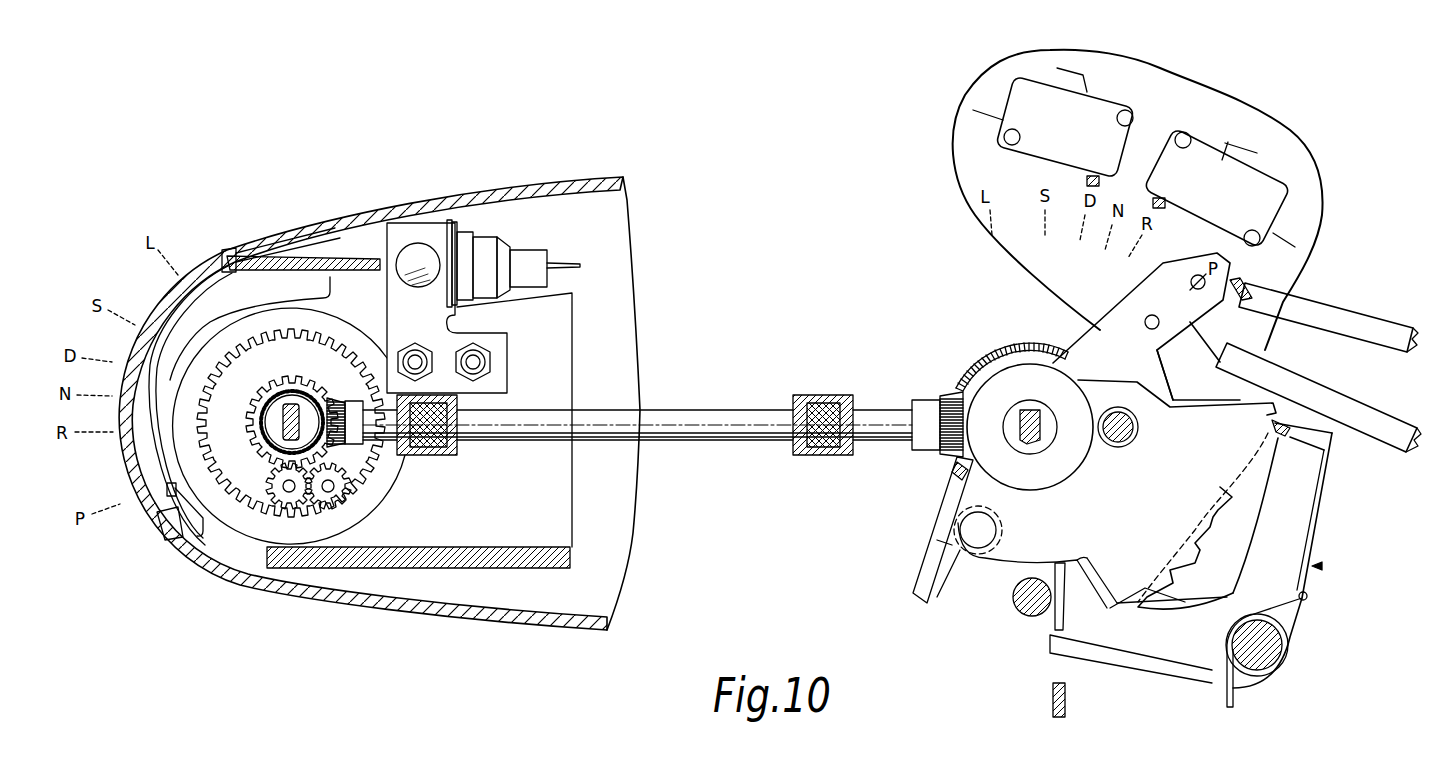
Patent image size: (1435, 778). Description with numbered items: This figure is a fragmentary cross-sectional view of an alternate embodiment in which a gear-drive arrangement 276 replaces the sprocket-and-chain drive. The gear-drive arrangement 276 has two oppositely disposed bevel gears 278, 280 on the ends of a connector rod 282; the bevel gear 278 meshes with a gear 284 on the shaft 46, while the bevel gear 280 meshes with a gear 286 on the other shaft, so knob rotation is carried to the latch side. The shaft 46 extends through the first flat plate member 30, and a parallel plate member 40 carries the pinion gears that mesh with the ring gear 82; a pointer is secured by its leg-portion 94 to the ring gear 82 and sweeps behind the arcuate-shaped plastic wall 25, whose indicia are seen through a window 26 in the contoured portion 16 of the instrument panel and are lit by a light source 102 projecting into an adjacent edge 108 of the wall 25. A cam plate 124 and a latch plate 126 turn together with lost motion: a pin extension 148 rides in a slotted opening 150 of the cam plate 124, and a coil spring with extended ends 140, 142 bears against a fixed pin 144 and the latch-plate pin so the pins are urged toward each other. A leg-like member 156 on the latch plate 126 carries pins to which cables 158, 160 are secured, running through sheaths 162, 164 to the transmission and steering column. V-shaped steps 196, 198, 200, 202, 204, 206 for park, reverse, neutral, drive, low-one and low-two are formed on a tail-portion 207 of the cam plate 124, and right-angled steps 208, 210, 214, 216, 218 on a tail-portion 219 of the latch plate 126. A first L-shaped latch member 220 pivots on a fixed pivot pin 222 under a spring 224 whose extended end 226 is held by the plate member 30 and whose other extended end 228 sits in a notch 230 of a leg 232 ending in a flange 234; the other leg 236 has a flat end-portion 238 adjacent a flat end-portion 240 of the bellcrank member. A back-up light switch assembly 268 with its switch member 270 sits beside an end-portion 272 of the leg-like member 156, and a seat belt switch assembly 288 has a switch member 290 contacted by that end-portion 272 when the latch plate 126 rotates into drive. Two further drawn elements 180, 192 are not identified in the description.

The contoured rearwardly extending portion 16 is at (440, 608).
The arcuate-shaped plastic wall 25 is at (170, 515).
The window 26 is at (207, 270).
The first flat plate member 30 is at (1273, 115).
The plate member 40 is at (550, 525).
The shaft 46 is at (283, 422).
The ring gear 82 is at (363, 502).
The leg-portion 94 is at (170, 487).
The light source 102 is at (415, 252).
The adjacent edge 108 is at (240, 247).
The cam plate 124 is at (975, 490).
The latch plate 126 is at (1098, 348).
The extended end 140 is at (1055, 620).
The extended end 142 is at (925, 560).
The fixed pin 144 is at (1020, 594).
The pin extension 148 is at (985, 532).
The slotted opening 150 is at (992, 512).
The leg-like member 156 is at (1155, 292).
The cable 158 is at (1233, 300).
The cable 160 is at (1197, 345).
The sheath 162 is at (1320, 318).
The sheath 164 is at (1300, 388).
The pin 180 is at (1125, 432).
The bushing 192 is at (1138, 425).
The V-shaped step 196 is at (1280, 430).
The V-shaped step 198 is at (1230, 493).
The V-shaped step 200 is at (1218, 521).
The V-shaped step 202 is at (1200, 547).
The V-shaped step 204 is at (1177, 574).
The V-shaped step 206 is at (1152, 600).
The tail-portion 207 is at (1080, 615).
The right-angled step 208 is at (1270, 430).
The right-angled step 210 is at (1263, 477).
The right-angled step 214 is at (1205, 537).
The right-angled step 216 is at (1187, 563).
The right-angled step 218 is at (1165, 608).
The tail-portion 219 is at (1125, 612).
The first L-shaped latch member 220 is at (1322, 567).
The fixed pivot pin 222 is at (1262, 650).
The spring 224 is at (1288, 643).
The extended end 226 is at (1232, 695).
The extended end 228 is at (1305, 599).
The notch 230 is at (1307, 594).
The leg 232 is at (1315, 542).
The flange 234 is at (1300, 430).
The leg 236 is at (1195, 678).
The flat end-portion 238 is at (1065, 655).
The flat end-portion 240 is at (1052, 700).
The back-up light switch assembly 268 is at (1283, 175).
The switch member 270 is at (1165, 207).
The end-portion 272 is at (1232, 268).
The gear-drive arrangement 276 is at (662, 410).
The bevel gear 278 is at (336, 400).
The bevel gear 280 is at (950, 400).
The connector rod 282 is at (698, 442).
The gear 284 is at (292, 392).
The gear 286 is at (1010, 352).
The seat belt switch assembly 288 is at (1108, 100).
The switch member 290 is at (1087, 181).